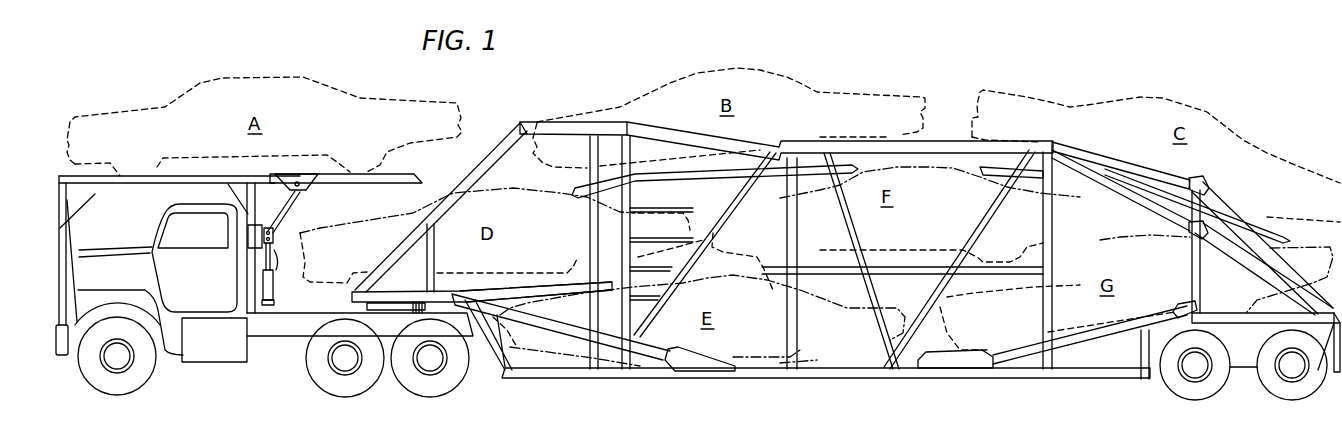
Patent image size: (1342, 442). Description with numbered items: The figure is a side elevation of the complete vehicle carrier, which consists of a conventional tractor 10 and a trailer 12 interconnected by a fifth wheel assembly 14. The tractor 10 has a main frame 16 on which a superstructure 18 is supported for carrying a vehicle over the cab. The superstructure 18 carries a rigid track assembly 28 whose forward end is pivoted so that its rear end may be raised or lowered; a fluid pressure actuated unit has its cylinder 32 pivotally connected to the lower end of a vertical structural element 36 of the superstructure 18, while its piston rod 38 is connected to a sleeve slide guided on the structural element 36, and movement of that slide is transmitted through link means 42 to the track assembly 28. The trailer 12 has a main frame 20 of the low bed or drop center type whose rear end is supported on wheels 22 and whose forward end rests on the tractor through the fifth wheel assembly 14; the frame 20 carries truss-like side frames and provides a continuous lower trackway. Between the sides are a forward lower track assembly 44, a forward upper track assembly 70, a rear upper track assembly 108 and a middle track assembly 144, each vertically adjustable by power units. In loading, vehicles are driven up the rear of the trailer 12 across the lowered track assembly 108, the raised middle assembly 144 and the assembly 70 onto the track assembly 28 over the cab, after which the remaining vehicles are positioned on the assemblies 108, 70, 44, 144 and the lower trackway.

The tractor 10 is at (196, 382).
The trailer 12 is at (750, 393).
The fifth wheel assembly 14 is at (408, 290).
The main frame 16 is at (292, 318).
The superstructure 18 is at (70, 249).
The main frame 20 is at (812, 375).
The wheels 22 is at (1271, 398).
The track assembly 28 is at (389, 180).
The cylinder 32 is at (264, 286).
The vertical structural element 36 is at (251, 260).
The piston rod 38 is at (282, 256).
The link means 42 is at (283, 208).
The forward track assembly 44 is at (532, 282).
The forward upper track assembly 70 is at (783, 147).
The rear upper track assembly 108 is at (1070, 176).
The middle track assembly 144 is at (917, 267).